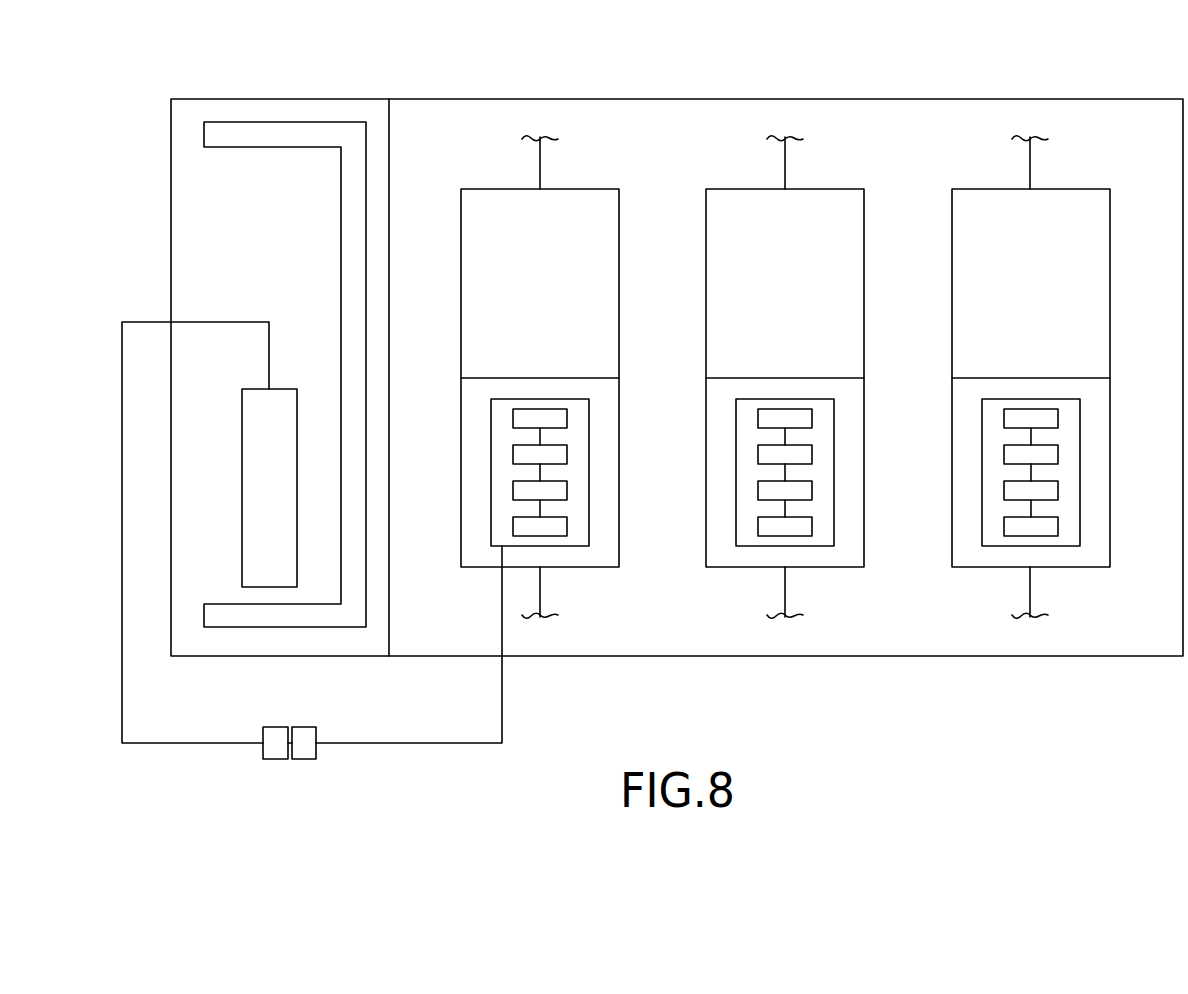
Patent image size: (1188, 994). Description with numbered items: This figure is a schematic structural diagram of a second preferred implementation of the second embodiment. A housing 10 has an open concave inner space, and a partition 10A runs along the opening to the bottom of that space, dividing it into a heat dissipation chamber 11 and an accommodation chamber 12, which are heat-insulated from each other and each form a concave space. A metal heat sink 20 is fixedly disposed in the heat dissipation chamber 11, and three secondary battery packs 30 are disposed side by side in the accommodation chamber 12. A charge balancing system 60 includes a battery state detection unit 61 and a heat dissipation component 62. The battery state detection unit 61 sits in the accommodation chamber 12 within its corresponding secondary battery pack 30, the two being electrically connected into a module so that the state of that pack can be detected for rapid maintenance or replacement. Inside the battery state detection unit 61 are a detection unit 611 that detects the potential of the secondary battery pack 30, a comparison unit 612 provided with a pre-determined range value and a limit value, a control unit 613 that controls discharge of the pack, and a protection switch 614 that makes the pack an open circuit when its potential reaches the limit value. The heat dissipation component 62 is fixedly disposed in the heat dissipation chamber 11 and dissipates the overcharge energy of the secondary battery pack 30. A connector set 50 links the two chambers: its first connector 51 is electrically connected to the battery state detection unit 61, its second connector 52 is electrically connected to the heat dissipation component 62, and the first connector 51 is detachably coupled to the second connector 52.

The housing 10 is at (450, 88).
The partition 10A is at (390, 150).
The heat dissipation chamber 11 is at (200, 115).
The accommodation chamber 12 is at (650, 157).
The heat sink 20 is at (270, 138).
The secondary battery pack 30 is at (562, 205).
The connector set 50 is at (292, 801).
The first connector 51 is at (302, 759).
The second connector 52 is at (272, 759).
The charge balancing system 60 is at (556, 552).
The battery state detection unit 61 is at (551, 470).
The detection unit 611 is at (563, 421).
The comparison unit 612 is at (563, 457).
The control unit 613 is at (563, 493).
The protection switch 614 is at (563, 529).
The heat dissipation component 62 is at (253, 552).